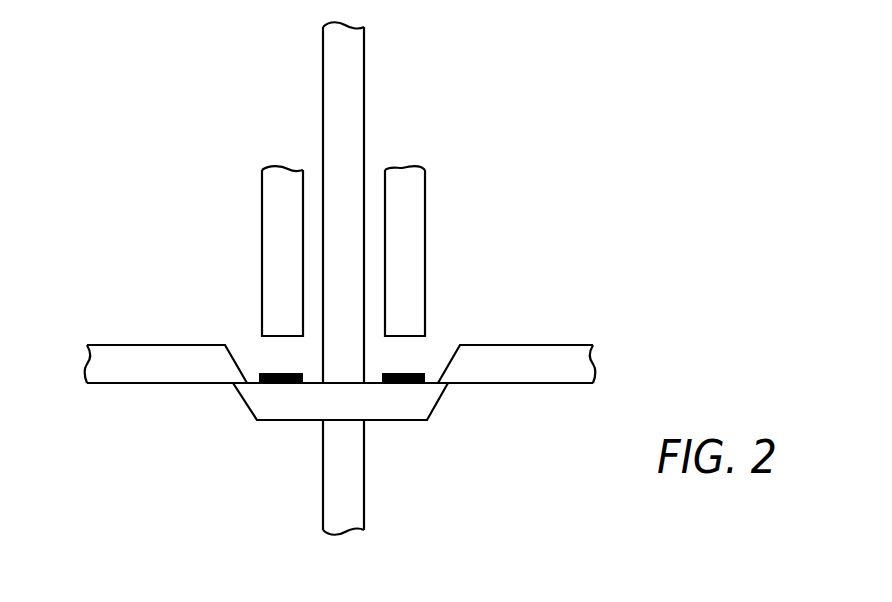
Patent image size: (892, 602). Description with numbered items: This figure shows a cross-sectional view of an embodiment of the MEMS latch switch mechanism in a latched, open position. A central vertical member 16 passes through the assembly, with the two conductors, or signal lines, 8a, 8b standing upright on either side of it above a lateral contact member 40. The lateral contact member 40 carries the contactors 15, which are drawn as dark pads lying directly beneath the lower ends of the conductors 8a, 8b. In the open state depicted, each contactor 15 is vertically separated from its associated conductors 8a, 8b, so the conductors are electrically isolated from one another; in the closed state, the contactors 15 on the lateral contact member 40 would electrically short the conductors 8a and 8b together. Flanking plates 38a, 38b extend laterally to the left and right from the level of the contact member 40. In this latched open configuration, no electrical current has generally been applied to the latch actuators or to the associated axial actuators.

The shaft 16 is at (355, 62).
The conductor 8a is at (413, 192).
The conductor 8b is at (273, 192).
The plate 38a is at (563, 345).
The plate 38b is at (118, 345).
The lateral contact member 40 is at (397, 435).
The contactor 15 is at (263, 375).